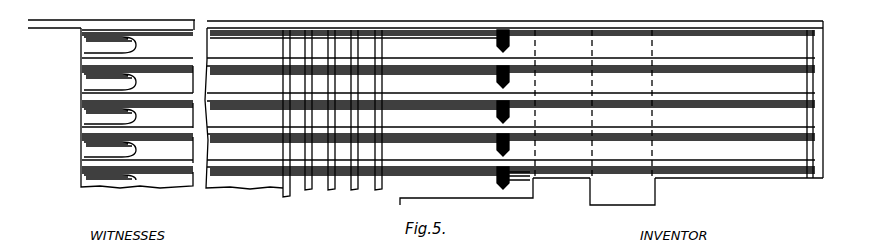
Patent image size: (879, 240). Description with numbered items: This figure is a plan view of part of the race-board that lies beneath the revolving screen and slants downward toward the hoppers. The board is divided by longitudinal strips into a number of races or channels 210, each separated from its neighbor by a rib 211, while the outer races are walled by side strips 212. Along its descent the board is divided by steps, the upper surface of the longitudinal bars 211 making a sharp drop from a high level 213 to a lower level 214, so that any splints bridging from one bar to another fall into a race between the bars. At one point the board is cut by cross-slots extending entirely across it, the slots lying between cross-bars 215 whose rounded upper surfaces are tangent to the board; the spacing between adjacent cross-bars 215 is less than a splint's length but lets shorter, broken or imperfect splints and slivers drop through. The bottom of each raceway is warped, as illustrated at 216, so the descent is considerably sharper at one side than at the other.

The races or channels 210 is at (440, 190).
The rib 211 is at (410, 64).
The side strips 212 is at (548, 27).
The high level step 213 is at (507, 166).
The lower level step 214 is at (280, 66).
The cross-bars 215 is at (353, 29).
The warped bottom surface 216 is at (82, 53).